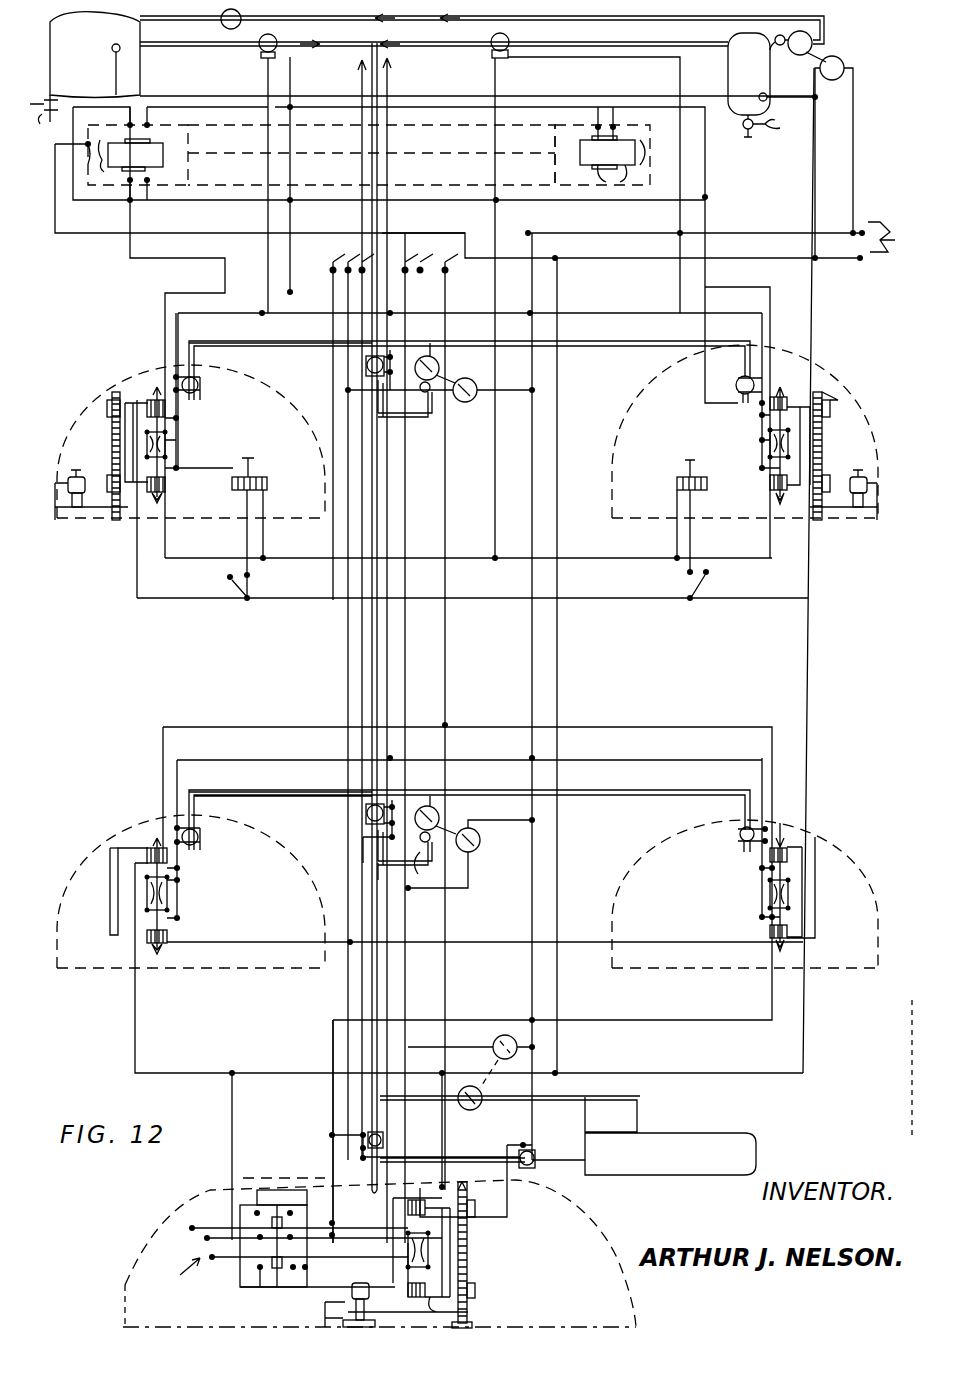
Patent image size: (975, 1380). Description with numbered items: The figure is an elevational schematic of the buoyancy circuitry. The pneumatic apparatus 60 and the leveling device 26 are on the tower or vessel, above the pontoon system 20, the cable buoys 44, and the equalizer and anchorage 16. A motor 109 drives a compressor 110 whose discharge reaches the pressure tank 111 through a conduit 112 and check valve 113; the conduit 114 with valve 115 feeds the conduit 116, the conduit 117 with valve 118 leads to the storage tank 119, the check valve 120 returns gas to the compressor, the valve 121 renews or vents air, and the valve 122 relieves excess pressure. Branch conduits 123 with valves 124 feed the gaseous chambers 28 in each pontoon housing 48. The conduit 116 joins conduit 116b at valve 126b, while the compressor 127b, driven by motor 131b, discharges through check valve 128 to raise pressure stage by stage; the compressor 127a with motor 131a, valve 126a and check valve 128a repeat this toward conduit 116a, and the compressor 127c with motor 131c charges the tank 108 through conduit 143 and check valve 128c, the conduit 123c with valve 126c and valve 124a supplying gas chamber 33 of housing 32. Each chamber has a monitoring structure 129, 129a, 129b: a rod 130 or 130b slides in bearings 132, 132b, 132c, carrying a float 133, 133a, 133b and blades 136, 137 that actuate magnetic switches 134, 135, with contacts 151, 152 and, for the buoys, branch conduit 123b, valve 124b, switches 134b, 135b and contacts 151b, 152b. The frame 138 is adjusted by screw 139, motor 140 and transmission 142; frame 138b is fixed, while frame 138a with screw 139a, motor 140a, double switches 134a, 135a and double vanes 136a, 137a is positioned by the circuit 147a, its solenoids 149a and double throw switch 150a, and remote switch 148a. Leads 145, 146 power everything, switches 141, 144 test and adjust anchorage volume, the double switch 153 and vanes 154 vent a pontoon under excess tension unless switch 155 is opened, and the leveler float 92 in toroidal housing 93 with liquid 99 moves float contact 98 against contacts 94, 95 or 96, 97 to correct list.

The anchorage 16 is at (108, 1208).
The pontoon system 20 is at (98, 582).
The leveling device 26 is at (86, 250).
The gaseous chamber 28 is at (667, 432).
The housing 32 is at (160, 1248).
The gas chamber 33 is at (126, 1288).
The cable buoys 44 is at (86, 994).
The pontoon housing 48 is at (655, 400).
The pneumatic apparatus 60 is at (540, 80).
The float 92 is at (163, 154).
The toroidal housing 93 is at (410, 186).
The contact 94 is at (128, 125).
The contact 95 is at (148, 125).
The contact 96 is at (590, 175).
The contact 97 is at (612, 178).
The float contact 98 is at (580, 156).
The liquid 99 is at (178, 177).
The tank 108 is at (756, 1140).
The motor 109 is at (846, 70).
The compressor 110 is at (832, 56).
The pressure tank 111 is at (147, 56).
The conduit 112 is at (833, 30).
The check valve 113 is at (231, 30).
The conduit 114 is at (258, 50).
The valve 115 is at (290, 57).
The conduit 116 is at (385, 148).
The conduit 116a is at (372, 996).
The conduit 116b is at (372, 650).
The conduit 117 is at (392, 60).
The valve 118 is at (492, 52).
The storage tank 119 is at (728, 74).
The check valve 120 is at (780, 46).
The valve 121 is at (748, 130).
The valve 122 is at (56, 128).
The branch conduit 123 is at (643, 333).
The branch conduit 123b is at (655, 782).
The conduit 123c is at (498, 1163).
The valve 124 is at (736, 380).
The valve 124a is at (368, 1136).
The valve 124b is at (737, 830).
The valve 126a is at (366, 815).
The valve 126b is at (366, 368).
The valve 126c is at (555, 1144).
The compressor 127a is at (445, 805).
The compressor 127b is at (438, 356).
The compressor 127c is at (458, 1106).
The check valve 128 is at (418, 392).
The check valve 128a is at (412, 862).
The check valve 128c is at (638, 1118).
The buoyancy monitoring structure 129 is at (816, 550).
The buoyancy monitoring structure 129a is at (566, 1202).
The buoyancy monitoring structure 129b is at (815, 970).
The rod 130 is at (165, 444).
The rod 130b is at (168, 892).
The motor 131a is at (478, 830).
The motor 131b is at (458, 401).
The motor 131c is at (504, 1036).
The bearings 132 is at (160, 380).
The bearings 132b is at (160, 830).
The bearings 132c is at (158, 950).
The float 133 is at (770, 440).
The float 133a is at (405, 1238).
The float 133b is at (770, 890).
The magnetically operated switch 134 is at (775, 492).
The double magnetic switch 134a is at (460, 1312).
The magnetically operated switch 134b is at (778, 946).
The magnetically operated switch 135 is at (784, 392).
The double magnetic switch 135a is at (452, 1195).
The magnetically operated switch 135b is at (784, 836).
The switch actuating blade 136 is at (825, 452).
The double vane 136a is at (460, 1255).
The switch actuating blade 137 is at (830, 410).
The double vane 137a is at (460, 1230).
The frame 138 is at (110, 405).
The frame 138a is at (460, 1284).
The frame 138b is at (108, 848).
The power operated screw 139 is at (112, 455).
The power operated screw 139a is at (556, 1252).
The motor 140 is at (858, 510).
The motor 140a is at (350, 1302).
The switch 141 is at (355, 250).
The power transmission means 142 is at (92, 522).
The conduit 143 is at (586, 1100).
The switch 144 is at (440, 255).
The lead 145 is at (745, 222).
The lead 146 is at (802, 262).
The directional rotation control circuit 147a is at (192, 1284).
The remote switch 148a is at (214, 1183).
The solenoids 149a is at (290, 1170).
The double throw switch 150a is at (395, 1258).
The contact 151 is at (770, 482).
The contact 151b is at (770, 930).
The contact 152 is at (770, 404).
The contact 152b is at (770, 855).
The double magnetic switch 153 is at (680, 478).
The vanes 154 is at (690, 460).
The switch 155 is at (230, 580).